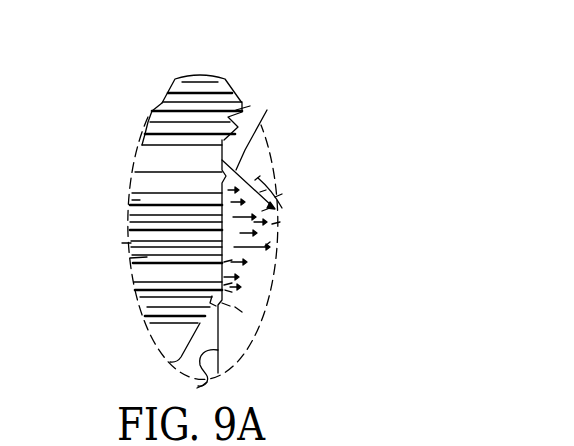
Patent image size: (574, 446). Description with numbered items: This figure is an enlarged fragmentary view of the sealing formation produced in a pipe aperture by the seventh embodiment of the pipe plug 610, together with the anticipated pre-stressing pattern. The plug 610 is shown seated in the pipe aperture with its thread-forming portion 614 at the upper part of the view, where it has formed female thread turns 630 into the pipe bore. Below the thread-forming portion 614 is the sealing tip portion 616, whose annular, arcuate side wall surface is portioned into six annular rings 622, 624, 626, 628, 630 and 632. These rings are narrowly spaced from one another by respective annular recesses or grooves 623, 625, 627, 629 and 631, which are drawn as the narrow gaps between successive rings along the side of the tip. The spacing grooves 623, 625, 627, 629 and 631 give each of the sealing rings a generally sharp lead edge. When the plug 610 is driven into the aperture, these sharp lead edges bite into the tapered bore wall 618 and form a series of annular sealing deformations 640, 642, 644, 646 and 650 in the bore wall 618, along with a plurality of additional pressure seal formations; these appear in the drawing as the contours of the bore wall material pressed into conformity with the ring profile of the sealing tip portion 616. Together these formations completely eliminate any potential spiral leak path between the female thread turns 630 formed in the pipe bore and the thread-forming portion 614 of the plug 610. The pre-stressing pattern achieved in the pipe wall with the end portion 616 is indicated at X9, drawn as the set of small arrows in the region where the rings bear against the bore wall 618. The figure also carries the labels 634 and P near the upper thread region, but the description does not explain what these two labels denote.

The pipe plug 610 is at (120, 114).
The thread-forming portion 614 is at (158, 121).
The annular groove 623 is at (132, 200).
The annular groove 625 is at (130, 230).
The sealing tip portion 616 is at (114, 242).
The annular groove 627 is at (130, 258).
The annular groove 629 is at (147, 290).
The annular groove 631 is at (150, 317).
The annular ring 632 is at (177, 345).
The tapered bore wall 618 is at (197, 388).
The upper thread tooth 634 is at (290, 190).
The pitch line P is at (267, 110).
The annular ring 622 is at (255, 180).
The annular sealing deformation 650 is at (266, 189).
The pre-stressing pattern X9 is at (275, 197).
The annular ring 624 is at (262, 211).
The annular sealing deformation 646 is at (286, 222).
The annular ring 626 is at (265, 246).
The annular sealing deformation 644 is at (224, 262).
The annular ring 628 is at (224, 285).
The annular sealing deformation 642 is at (225, 290).
The annular ring 630 is at (222, 303).
The annular sealing deformation 640 is at (235, 307).